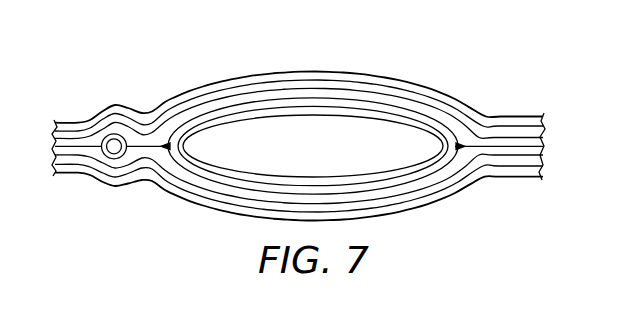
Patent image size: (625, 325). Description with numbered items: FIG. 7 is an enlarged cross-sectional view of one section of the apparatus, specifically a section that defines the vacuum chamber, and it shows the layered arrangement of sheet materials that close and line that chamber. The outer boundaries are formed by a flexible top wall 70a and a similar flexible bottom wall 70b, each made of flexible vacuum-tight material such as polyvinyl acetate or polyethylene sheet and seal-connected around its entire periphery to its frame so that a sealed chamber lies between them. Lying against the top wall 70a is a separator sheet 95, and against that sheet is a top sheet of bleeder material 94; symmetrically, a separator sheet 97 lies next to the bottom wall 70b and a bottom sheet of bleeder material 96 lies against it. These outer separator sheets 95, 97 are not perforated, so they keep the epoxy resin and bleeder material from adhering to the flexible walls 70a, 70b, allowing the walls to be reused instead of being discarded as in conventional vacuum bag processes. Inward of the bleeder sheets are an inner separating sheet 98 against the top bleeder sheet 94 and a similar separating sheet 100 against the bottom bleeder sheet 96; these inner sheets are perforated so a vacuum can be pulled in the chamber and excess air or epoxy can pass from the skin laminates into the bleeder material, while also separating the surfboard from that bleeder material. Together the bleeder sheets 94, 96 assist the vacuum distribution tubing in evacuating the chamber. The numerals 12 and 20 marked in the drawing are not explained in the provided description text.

The central opening 12 is at (323, 155).
The heater assembly 20 is at (400, 118).
The flexible top wall 70a is at (233, 47).
The flexible wall 70b is at (222, 214).
The top sheet of bleeder material 94 is at (293, 93).
The separator sheet 95 is at (260, 85).
The bottom sheet of bleeder material 96 is at (437, 180).
The separator sheet 97 is at (397, 203).
The inner separating sheet 98 is at (377, 105).
The separating sheet 100 is at (192, 170).